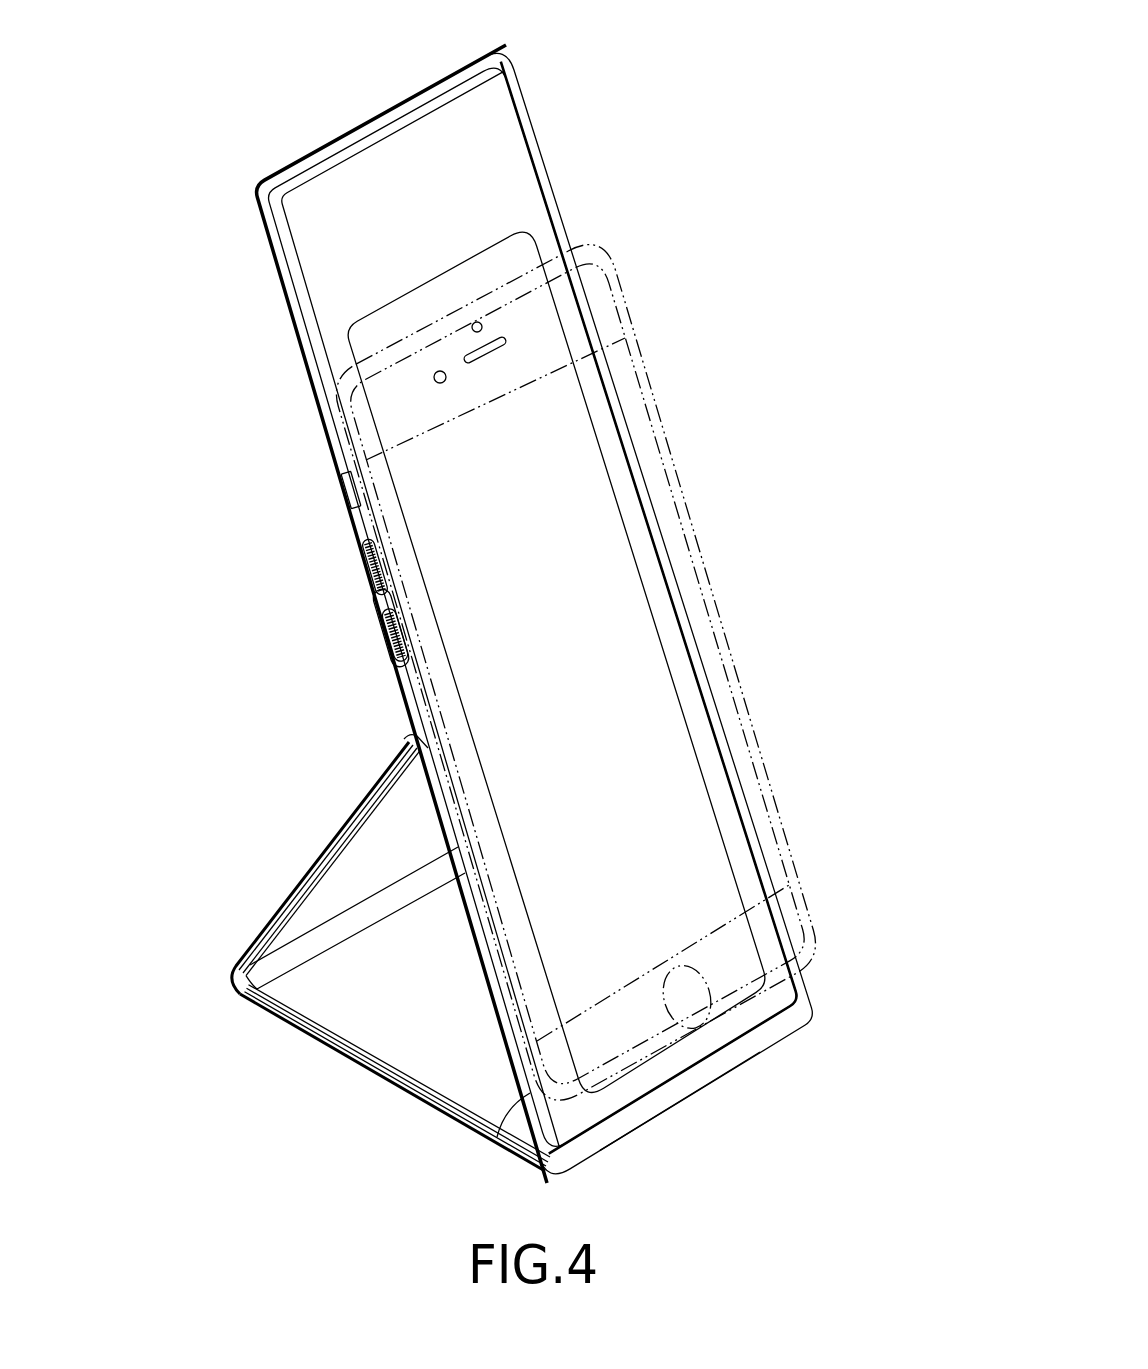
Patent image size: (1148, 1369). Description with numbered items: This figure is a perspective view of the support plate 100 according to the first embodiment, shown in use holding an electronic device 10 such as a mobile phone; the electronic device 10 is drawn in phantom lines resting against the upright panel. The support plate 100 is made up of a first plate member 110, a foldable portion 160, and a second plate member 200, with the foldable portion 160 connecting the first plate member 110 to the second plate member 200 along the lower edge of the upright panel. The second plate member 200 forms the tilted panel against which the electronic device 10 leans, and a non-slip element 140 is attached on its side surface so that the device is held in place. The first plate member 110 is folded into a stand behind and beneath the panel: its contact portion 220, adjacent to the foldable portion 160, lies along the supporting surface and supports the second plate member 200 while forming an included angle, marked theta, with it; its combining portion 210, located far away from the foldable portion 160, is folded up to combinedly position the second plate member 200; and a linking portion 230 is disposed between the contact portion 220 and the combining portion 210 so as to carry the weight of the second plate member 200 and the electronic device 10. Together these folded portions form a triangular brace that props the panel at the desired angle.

The support plate 100 is at (492, 614).
The second plate member 200 is at (619, 405).
The non-slip element 140 is at (640, 606).
The foldable portion 160 is at (681, 1097).
The first plate member 110 is at (325, 946).
The combining portion 210 is at (397, 663).
The contact portion 220 is at (359, 1078).
The linking portion 230 is at (308, 889).
The electronic device 10 is at (745, 700).